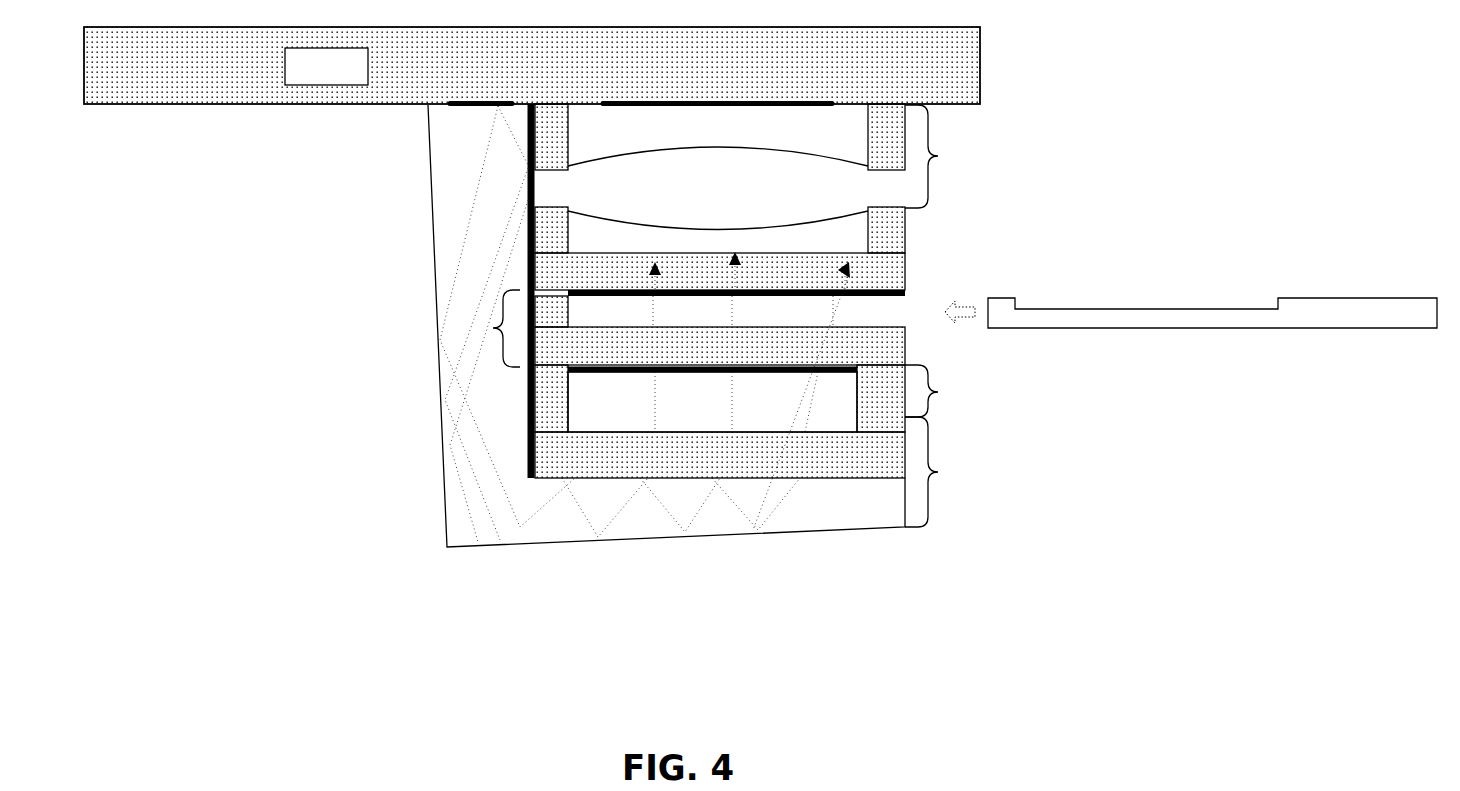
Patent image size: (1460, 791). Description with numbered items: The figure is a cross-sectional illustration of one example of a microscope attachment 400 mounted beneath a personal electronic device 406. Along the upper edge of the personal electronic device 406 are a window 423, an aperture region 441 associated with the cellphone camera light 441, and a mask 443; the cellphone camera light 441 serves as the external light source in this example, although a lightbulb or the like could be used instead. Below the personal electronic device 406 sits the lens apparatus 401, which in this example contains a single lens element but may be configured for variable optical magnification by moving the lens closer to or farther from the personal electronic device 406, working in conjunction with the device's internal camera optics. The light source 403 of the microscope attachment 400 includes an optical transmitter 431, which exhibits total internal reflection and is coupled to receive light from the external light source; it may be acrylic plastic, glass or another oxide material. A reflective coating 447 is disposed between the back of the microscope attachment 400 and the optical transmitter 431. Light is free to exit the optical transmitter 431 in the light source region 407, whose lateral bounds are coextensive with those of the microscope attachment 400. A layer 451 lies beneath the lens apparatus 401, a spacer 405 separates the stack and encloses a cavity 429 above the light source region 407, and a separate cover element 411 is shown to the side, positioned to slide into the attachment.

The microscope attachment 400 is at (938, 571).
The lens apparatus 401 is at (842, 178).
The light source 403 is at (679, 328).
The spacer 405 is at (796, 398).
The personal electronic device 406 is at (532, 65).
The light source region 407 is at (831, 472).
The cover member 411 is at (1191, 313).
The camera window 423 is at (293, 58).
The cavity 429 is at (642, 373).
The optical transmitter 431 is at (448, 220).
The cellphone camera light 441 is at (480, 102).
The opaque mask 443 is at (722, 100).
The reflective coating 447 is at (533, 100).
The diffuser layer 451 is at (587, 290).